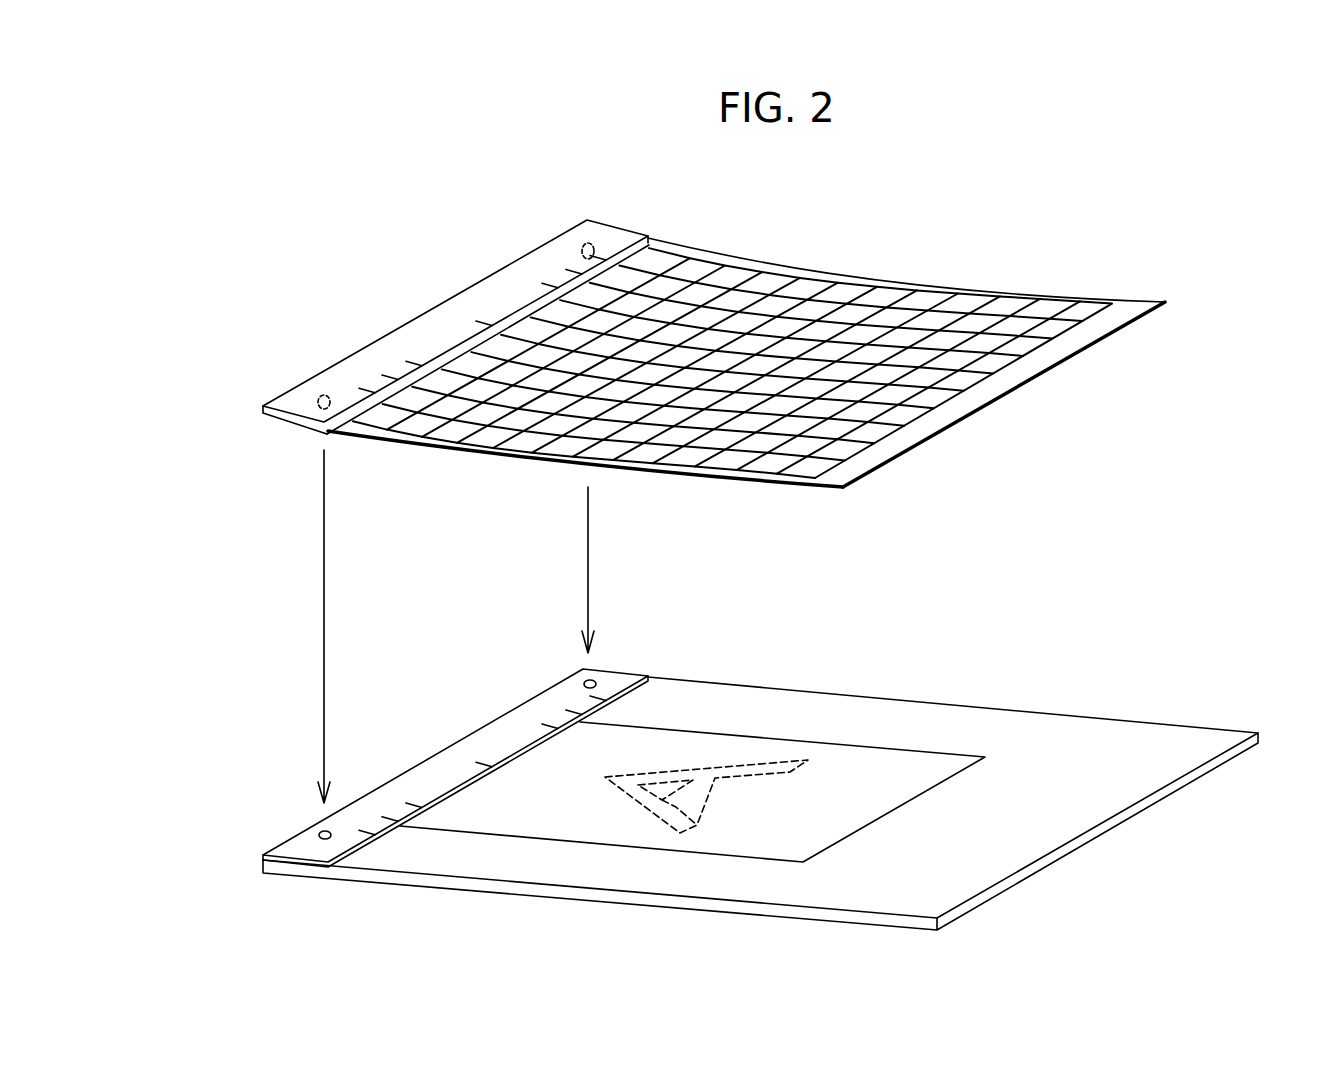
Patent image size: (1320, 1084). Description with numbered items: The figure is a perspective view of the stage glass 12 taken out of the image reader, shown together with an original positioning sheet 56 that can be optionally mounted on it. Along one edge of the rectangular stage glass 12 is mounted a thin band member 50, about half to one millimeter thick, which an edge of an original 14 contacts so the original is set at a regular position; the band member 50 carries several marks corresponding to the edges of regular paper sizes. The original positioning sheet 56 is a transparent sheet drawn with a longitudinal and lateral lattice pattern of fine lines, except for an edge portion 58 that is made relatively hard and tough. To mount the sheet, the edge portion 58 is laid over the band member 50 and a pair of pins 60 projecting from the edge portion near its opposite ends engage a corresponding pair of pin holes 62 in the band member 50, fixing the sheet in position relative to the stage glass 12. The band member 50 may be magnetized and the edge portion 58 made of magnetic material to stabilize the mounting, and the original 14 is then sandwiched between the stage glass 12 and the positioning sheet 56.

The stage glass 12 is at (1108, 836).
The original 14 is at (910, 802).
The band member 50 is at (300, 862).
The original positioning sheet 56 is at (995, 400).
The edge portion 58 is at (430, 317).
The pins 60 is at (600, 250).
The pin holes 62 is at (324, 831).